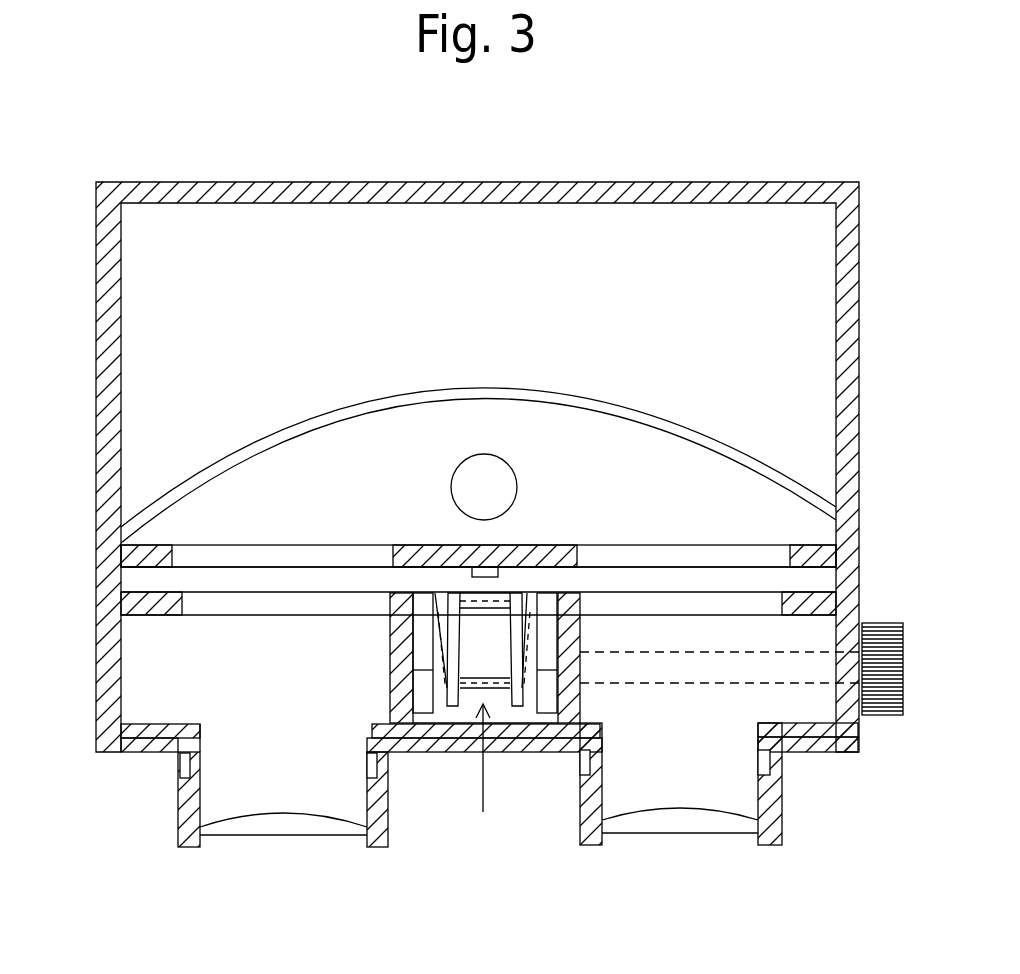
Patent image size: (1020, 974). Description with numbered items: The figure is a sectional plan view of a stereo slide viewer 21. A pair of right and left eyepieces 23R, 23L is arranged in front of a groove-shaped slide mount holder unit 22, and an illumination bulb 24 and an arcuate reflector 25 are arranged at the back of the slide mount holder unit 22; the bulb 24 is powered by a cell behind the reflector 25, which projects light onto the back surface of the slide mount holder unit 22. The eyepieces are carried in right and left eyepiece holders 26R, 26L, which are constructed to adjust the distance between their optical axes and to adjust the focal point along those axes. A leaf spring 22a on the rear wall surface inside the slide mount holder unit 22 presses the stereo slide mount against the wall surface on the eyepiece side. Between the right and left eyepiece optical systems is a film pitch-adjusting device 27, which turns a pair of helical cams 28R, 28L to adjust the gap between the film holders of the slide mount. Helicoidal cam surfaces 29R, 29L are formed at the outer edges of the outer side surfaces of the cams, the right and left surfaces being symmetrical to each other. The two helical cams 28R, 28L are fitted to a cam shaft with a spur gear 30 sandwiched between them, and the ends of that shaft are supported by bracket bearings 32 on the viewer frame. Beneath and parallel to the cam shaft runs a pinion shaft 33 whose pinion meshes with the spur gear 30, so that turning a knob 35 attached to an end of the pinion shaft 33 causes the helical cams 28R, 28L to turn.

The stereo slide viewer 21 is at (300, 168).
The slide mount holder unit 22 is at (147, 592).
The leaf spring 22a is at (492, 575).
The left eyepiece 23L is at (283, 836).
The right eyepiece 23R is at (690, 834).
The illumination bulb 24 is at (508, 456).
The arcuate reflector 25 is at (297, 433).
The left eyepiece holder 26L is at (178, 797).
The right eyepiece holder 26R is at (783, 800).
The film pitch-adjusting device 27 is at (490, 774).
The left helical cam 28L is at (455, 707).
The right helical cam 28R is at (516, 707).
The left cam surface 29L is at (455, 623).
The right cam surface 29R is at (522, 621).
The spur gear 30 is at (490, 668).
The bracket bearings 32 is at (412, 659).
The pinion shaft 33 is at (708, 684).
The knob 35 is at (882, 622).